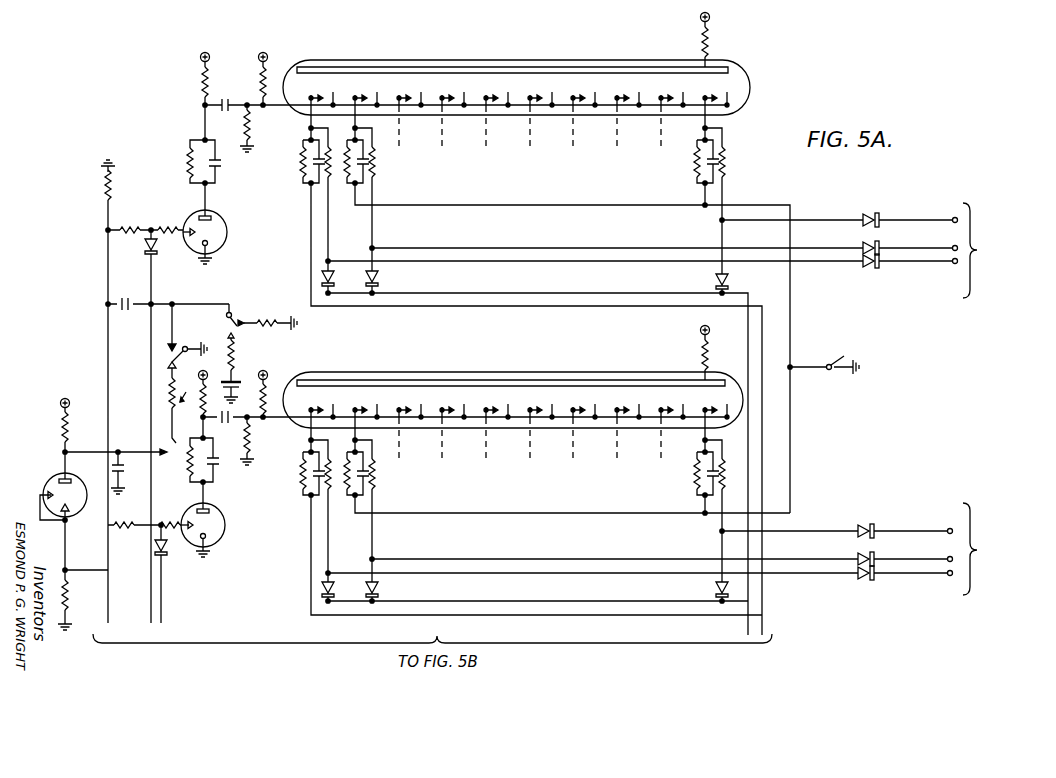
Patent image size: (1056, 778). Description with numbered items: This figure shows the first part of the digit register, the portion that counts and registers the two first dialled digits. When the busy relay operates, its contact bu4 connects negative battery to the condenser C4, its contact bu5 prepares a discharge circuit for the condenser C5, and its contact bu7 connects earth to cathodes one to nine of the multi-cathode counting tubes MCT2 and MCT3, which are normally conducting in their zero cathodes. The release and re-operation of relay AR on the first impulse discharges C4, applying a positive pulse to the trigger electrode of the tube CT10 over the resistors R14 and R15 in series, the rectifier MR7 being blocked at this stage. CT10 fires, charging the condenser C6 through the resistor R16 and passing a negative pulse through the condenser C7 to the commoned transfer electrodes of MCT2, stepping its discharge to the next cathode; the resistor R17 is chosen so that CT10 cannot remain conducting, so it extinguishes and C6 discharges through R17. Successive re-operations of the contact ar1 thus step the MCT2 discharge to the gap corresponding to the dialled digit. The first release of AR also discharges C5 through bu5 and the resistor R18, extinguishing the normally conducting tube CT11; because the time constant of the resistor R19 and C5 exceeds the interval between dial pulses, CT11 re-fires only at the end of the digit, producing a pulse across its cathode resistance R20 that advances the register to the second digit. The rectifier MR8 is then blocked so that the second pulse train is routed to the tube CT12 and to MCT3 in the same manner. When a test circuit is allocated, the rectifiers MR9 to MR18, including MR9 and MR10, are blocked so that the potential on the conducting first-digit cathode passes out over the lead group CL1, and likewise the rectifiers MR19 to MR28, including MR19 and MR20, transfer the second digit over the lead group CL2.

The resistor R14 is at (127, 227).
The resistor R15 is at (167, 220).
The resistor R16 is at (182, 79).
The resistor R17 is at (179, 144).
The resistor R18 is at (168, 404).
The resistor R19 is at (82, 426).
The cathode resistance R20 is at (73, 598).
The condenser C4 is at (122, 314).
The condenser C5 is at (129, 473).
The condenser C6 is at (227, 178).
The condenser C7 is at (226, 97).
The cold cathode tube CT10 is at (227, 237).
The normally conducting tube CT11 is at (49, 487).
The cold cathode tube CT12 is at (225, 530).
The rectifier MR7 is at (160, 262).
The rectifier MR8 is at (167, 562).
The rectifier MR9 is at (338, 283).
The rectifier MR10 is at (397, 276).
The rectifier MR18 is at (748, 276).
The rectifier MR19 is at (320, 594).
The rectifier MR20 is at (396, 591).
The rectifier MR28 is at (693, 592).
The multi-cathode counting tube MCT2 is at (516, 99).
The multi-cathode counting tube MCT3 is at (513, 412).
The relay contact bu4 is at (259, 350).
The relay contact bu5 is at (168, 462).
The relay contact bu7 is at (828, 356).
The relay contact ar1 is at (182, 346).
The common lead group CL1 is at (948, 250).
The common lead group CL2 is at (946, 551).